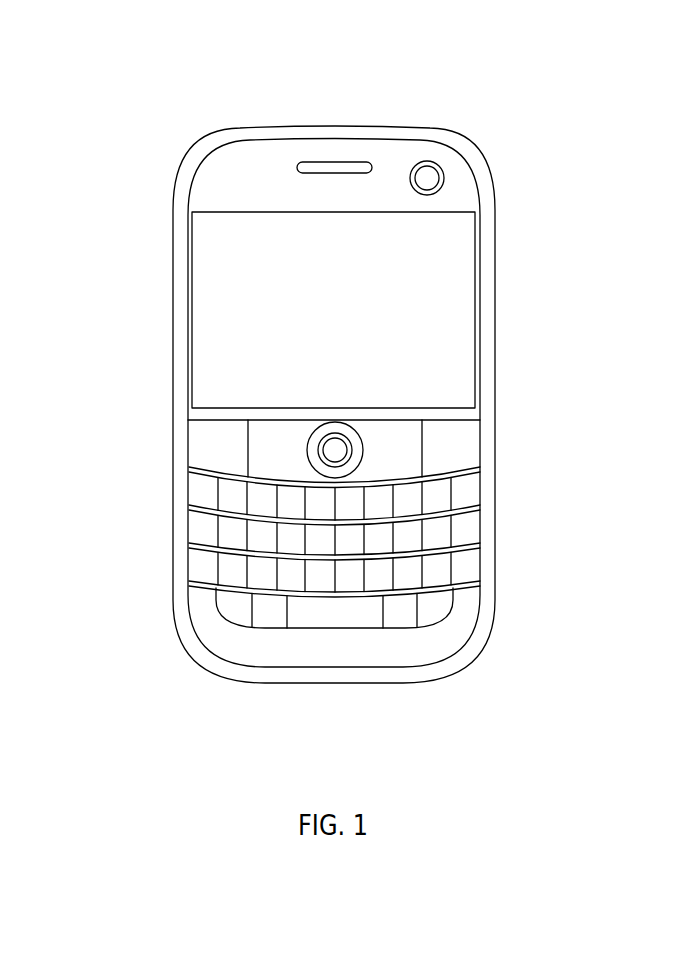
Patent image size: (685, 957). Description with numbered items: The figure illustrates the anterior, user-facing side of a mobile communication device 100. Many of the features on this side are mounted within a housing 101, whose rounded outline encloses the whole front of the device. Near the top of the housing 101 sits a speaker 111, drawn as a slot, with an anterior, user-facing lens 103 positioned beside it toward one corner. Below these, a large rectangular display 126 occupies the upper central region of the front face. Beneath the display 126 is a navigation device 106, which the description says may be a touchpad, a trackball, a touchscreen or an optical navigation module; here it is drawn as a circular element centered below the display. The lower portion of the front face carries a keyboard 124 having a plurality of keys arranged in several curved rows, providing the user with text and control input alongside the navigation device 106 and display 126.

The mobile communication device 100 is at (140, 109).
The housing 101 is at (173, 388).
The speaker 111 is at (330, 163).
The anterior lens 103 is at (445, 178).
The display 126 is at (350, 337).
The navigation device 106 is at (340, 436).
The keyboard 124 is at (507, 640).